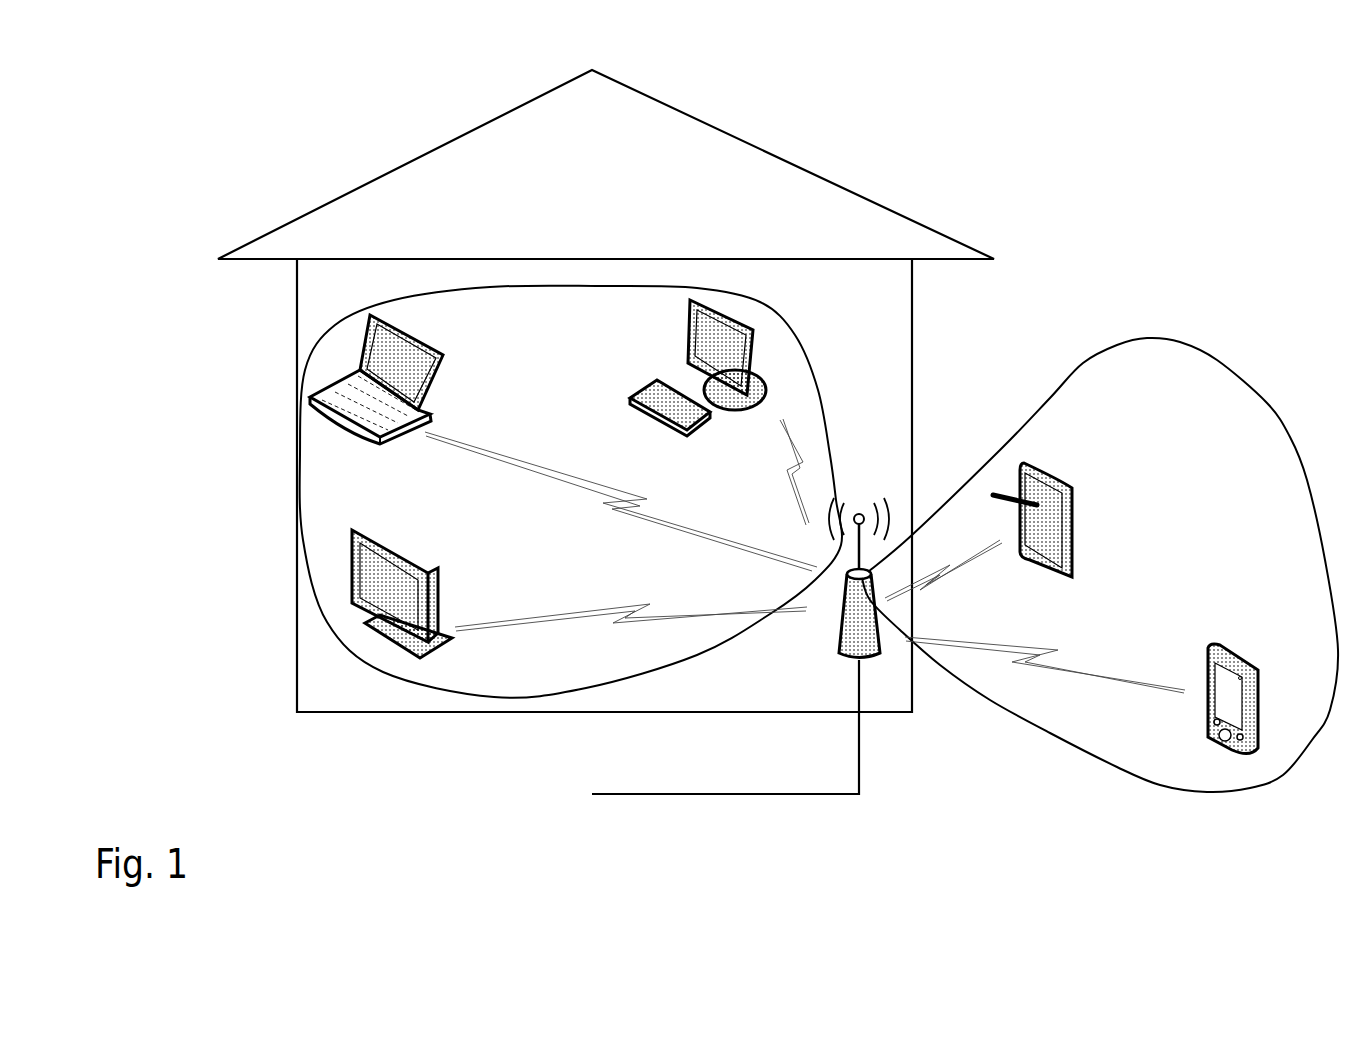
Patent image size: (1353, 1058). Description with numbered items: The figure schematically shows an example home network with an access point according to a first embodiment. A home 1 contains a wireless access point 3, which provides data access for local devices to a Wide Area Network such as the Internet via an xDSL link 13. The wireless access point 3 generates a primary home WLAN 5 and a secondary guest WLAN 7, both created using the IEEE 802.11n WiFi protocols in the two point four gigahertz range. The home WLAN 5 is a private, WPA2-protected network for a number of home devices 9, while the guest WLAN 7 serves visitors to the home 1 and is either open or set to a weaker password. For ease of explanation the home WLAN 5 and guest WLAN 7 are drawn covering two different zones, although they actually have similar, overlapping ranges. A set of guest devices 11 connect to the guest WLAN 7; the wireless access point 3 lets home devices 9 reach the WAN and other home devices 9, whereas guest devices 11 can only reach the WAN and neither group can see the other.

The home 1 is at (792, 165).
The wireless access point 3 is at (836, 650).
The home WLAN 5 is at (790, 343).
The guest WLAN 7 is at (1028, 716).
The home devices 9 is at (443, 357).
The guest devices 11 is at (1060, 478).
The xDSL link 13 is at (660, 796).